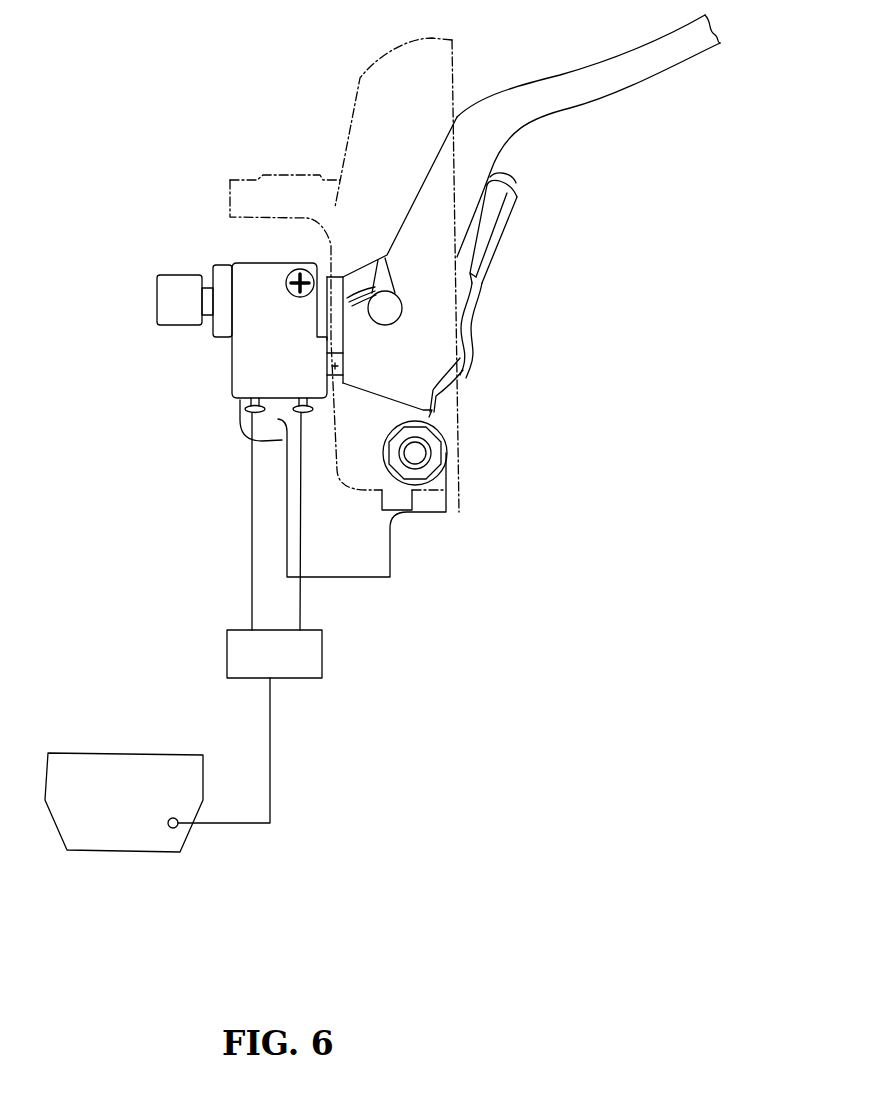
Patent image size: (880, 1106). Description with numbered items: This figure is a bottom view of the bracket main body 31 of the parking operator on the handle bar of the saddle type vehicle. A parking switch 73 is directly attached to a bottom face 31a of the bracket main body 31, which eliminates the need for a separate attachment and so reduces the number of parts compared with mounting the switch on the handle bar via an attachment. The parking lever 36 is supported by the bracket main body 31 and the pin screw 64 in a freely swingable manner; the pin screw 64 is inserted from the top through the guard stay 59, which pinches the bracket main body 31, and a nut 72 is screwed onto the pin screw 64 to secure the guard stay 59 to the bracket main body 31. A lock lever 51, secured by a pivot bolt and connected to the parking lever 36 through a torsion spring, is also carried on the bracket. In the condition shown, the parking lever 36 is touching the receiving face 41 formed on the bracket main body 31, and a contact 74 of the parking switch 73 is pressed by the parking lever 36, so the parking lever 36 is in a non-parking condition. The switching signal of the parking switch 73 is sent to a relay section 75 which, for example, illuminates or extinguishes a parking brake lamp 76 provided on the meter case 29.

The meter case 29 is at (132, 770).
The bracket main body 31 is at (362, 562).
The bottom face 31a is at (277, 441).
The parking lever 36 is at (541, 100).
The receiving face 41 is at (375, 262).
The lock lever 51 is at (463, 298).
The guard stay 59 is at (357, 152).
The pin screw 64 is at (415, 455).
The nut 72 is at (436, 453).
The parking switch 73 is at (255, 354).
The contact 74 is at (330, 377).
The relay section 75 is at (230, 655).
The parking brake lamp 76 is at (172, 828).